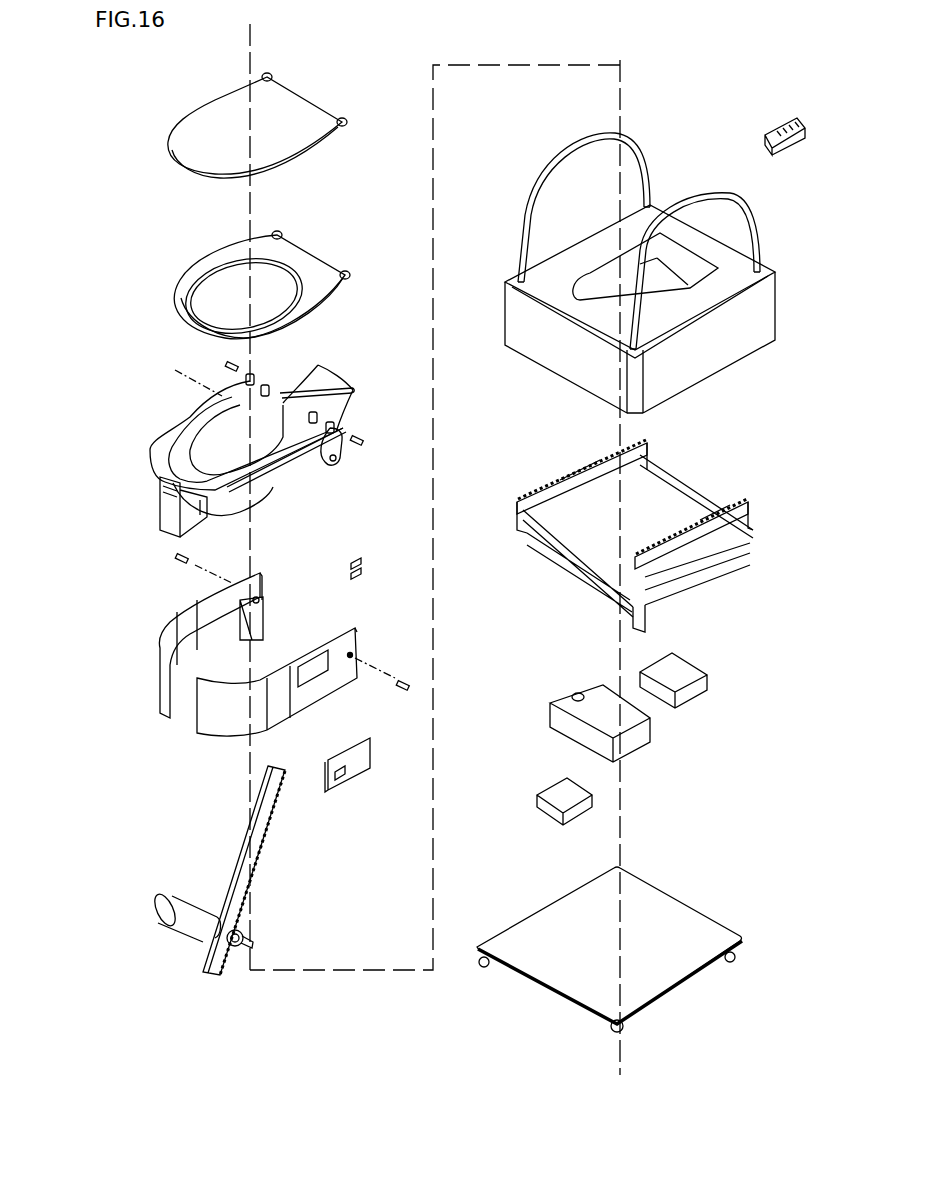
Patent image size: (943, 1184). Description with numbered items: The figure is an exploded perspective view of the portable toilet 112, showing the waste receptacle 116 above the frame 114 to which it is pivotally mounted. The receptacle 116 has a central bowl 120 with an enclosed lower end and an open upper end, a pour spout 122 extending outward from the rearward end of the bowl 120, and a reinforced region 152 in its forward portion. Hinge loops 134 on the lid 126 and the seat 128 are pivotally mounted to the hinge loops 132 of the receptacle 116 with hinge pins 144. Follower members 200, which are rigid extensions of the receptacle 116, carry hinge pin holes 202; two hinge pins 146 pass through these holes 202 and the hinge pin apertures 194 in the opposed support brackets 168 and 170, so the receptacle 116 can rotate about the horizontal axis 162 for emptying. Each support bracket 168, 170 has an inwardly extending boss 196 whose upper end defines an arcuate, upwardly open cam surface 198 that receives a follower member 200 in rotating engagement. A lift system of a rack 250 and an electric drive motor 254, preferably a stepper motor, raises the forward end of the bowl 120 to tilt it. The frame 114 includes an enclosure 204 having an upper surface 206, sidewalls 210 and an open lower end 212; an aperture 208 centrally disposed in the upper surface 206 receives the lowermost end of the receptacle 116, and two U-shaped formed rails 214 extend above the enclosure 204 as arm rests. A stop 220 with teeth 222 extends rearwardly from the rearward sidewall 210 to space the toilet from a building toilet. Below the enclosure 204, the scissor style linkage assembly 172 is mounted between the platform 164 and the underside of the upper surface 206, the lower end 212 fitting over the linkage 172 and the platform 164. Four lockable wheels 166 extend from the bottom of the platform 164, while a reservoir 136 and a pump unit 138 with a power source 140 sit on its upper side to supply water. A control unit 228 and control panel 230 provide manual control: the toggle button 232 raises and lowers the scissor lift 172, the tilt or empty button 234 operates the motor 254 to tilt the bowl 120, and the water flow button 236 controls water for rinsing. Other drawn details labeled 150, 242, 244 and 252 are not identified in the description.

The portable toilet 112 is at (157, 166).
The lid 126 is at (224, 110).
The seat 128 is at (207, 265).
The hinge loops 134 is at (270, 75).
The waste receptacle 116 is at (246, 532).
The bowl 120 is at (198, 447).
The pour spout 122 is at (327, 390).
The hinge loops 132 is at (262, 364).
The hinge pins 144 is at (226, 365).
The bracket 150 is at (165, 481).
The reinforced region 152 is at (230, 514).
The follower member 200 is at (326, 450).
The hinge pin hole 202 is at (333, 462).
The horizontal axis 162 is at (348, 466).
The hinge pins 146 is at (176, 559).
The support bracket 168 is at (220, 645).
The support bracket 170 is at (280, 666).
The hinge pin aperture 194 is at (257, 598).
The boss 196 is at (263, 618).
The cam surface 198 is at (262, 600).
The window 244 is at (340, 758).
The switch plate 242 is at (328, 772).
The up and down control toggle button 232 is at (372, 750).
The tilt or empty button 234 is at (376, 766).
The water flow button 236 is at (340, 780).
The control panel 230 is at (350, 701).
The rack 250 is at (258, 845).
The axle 252 is at (240, 930).
The electric drive motor 254 is at (185, 905).
The enclosure 204 is at (641, 291).
The sidewalls 210 is at (540, 345).
The open lower end 212 is at (720, 365).
The aperture 208 is at (595, 300).
The formed rails 214 is at (557, 165).
The upper surface 206 is at (657, 225).
The frame 114 is at (703, 182).
The stop 220 is at (787, 120).
The teeth 222 is at (787, 150).
The scissor style linkage assembly 172 is at (700, 490).
The reservoir 136 is at (588, 690).
The control unit 228 is at (680, 673).
The pump unit 138 is at (539, 784).
The power source 140 is at (560, 795).
The platform 164 is at (670, 933).
The wheels 166 is at (483, 967).